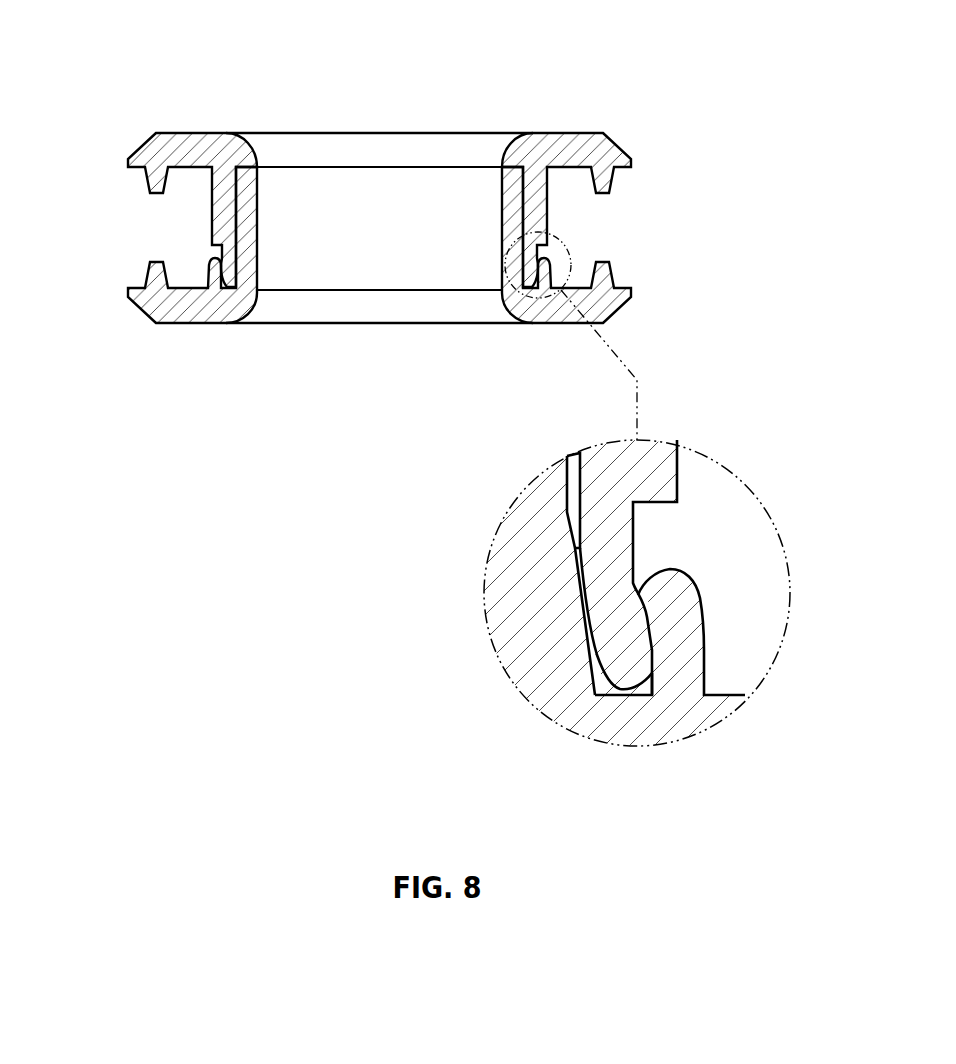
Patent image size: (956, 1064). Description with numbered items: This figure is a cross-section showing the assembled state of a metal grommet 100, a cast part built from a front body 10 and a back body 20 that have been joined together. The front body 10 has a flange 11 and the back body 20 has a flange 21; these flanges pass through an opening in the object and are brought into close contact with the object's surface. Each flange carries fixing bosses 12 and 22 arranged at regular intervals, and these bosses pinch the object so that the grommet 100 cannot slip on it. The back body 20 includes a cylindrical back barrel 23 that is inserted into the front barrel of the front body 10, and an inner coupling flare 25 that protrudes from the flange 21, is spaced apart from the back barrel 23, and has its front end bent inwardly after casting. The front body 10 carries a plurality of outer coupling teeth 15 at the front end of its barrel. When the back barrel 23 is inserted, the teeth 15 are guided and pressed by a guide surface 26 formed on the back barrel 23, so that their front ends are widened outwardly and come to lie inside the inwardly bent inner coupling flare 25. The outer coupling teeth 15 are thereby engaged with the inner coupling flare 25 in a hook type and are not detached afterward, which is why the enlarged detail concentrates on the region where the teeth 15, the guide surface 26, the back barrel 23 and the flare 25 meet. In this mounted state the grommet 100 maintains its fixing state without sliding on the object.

The metal grommet 100 is at (391, 90).
The front body 10 is at (566, 147).
The flange 11 is at (187, 168).
The fixing boss 12 is at (603, 183).
The back body 20 is at (202, 307).
The flange 21 is at (190, 288).
The fixing boss 22 is at (603, 275).
The back barrel 23 is at (537, 566).
The inner coupling flare 25 is at (672, 597).
The guide surface 26 is at (580, 620).
The outer coupling teeth 15 is at (623, 645).